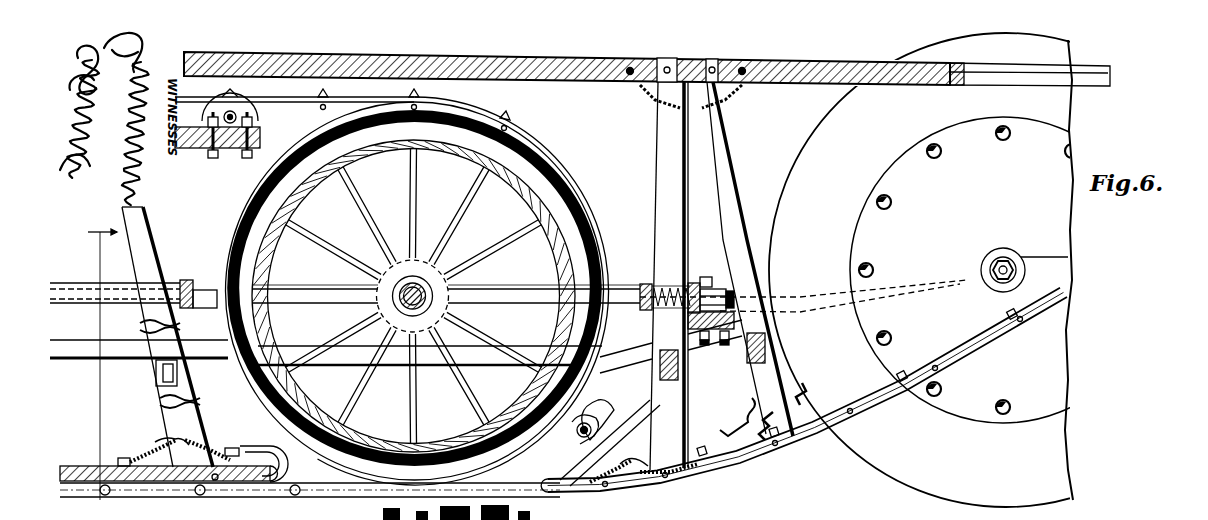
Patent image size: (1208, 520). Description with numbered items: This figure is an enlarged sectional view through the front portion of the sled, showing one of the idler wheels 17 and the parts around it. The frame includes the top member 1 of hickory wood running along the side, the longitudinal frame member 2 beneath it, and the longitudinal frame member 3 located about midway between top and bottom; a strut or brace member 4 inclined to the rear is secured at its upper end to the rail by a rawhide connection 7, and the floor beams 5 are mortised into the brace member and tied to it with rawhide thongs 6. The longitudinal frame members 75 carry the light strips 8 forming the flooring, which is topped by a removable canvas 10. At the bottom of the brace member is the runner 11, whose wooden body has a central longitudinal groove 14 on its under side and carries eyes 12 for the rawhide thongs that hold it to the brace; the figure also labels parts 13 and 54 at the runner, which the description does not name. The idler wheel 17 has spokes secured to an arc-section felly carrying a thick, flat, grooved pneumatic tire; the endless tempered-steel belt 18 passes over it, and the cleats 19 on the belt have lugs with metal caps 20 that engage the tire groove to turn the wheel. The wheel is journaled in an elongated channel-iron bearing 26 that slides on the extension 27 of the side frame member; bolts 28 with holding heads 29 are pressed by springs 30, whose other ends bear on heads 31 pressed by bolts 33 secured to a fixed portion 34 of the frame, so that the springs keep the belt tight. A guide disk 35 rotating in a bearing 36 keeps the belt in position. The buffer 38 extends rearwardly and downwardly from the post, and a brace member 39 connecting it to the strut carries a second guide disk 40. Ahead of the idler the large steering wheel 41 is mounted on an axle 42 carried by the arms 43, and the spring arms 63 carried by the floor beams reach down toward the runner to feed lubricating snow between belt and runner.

The top member 1 is at (770, 66).
The longitudinal frame member 2 is at (186, 150).
The longitudinal frame member 3 is at (86, 286).
The strut or brace member 4 is at (658, 151).
The floor beam 5 is at (660, 369).
The rawhide thong 6 is at (173, 327).
The rawhide connection 7 is at (652, 96).
The light strip 8 is at (342, 497).
The canvas 10 is at (97, 354).
The runner 11 is at (80, 470).
The eye 12 is at (124, 458).
The spring 13 is at (152, 442).
The central longitudinal groove 14 is at (80, 497).
The idler 17 is at (538, 176).
The endless belt 18 is at (588, 203).
The cleat 19 is at (582, 190).
The metal cap 20 is at (562, 180).
The elongated bearing 26 is at (196, 279).
The extension 27 is at (808, 302).
The bolt 28 is at (662, 284).
The holding head 29 is at (705, 277).
The spring 30 is at (652, 344).
The head 31 is at (676, 295).
The bolt 33 is at (700, 292).
The fixed portion of the frame 34 is at (734, 314).
The guide disk 35 is at (256, 112).
The bearing 36 is at (243, 158).
The buffer 38 is at (872, 402).
The brace member 39 is at (620, 412).
The guide disk 40 is at (590, 418).
The steering wheel 41 is at (790, 180).
The axle 42 is at (997, 260).
The arm 43 is at (1040, 257).
The bolt 54 is at (290, 496).
The spring arm 63 is at (581, 366).
The frame member 75 is at (108, 352).